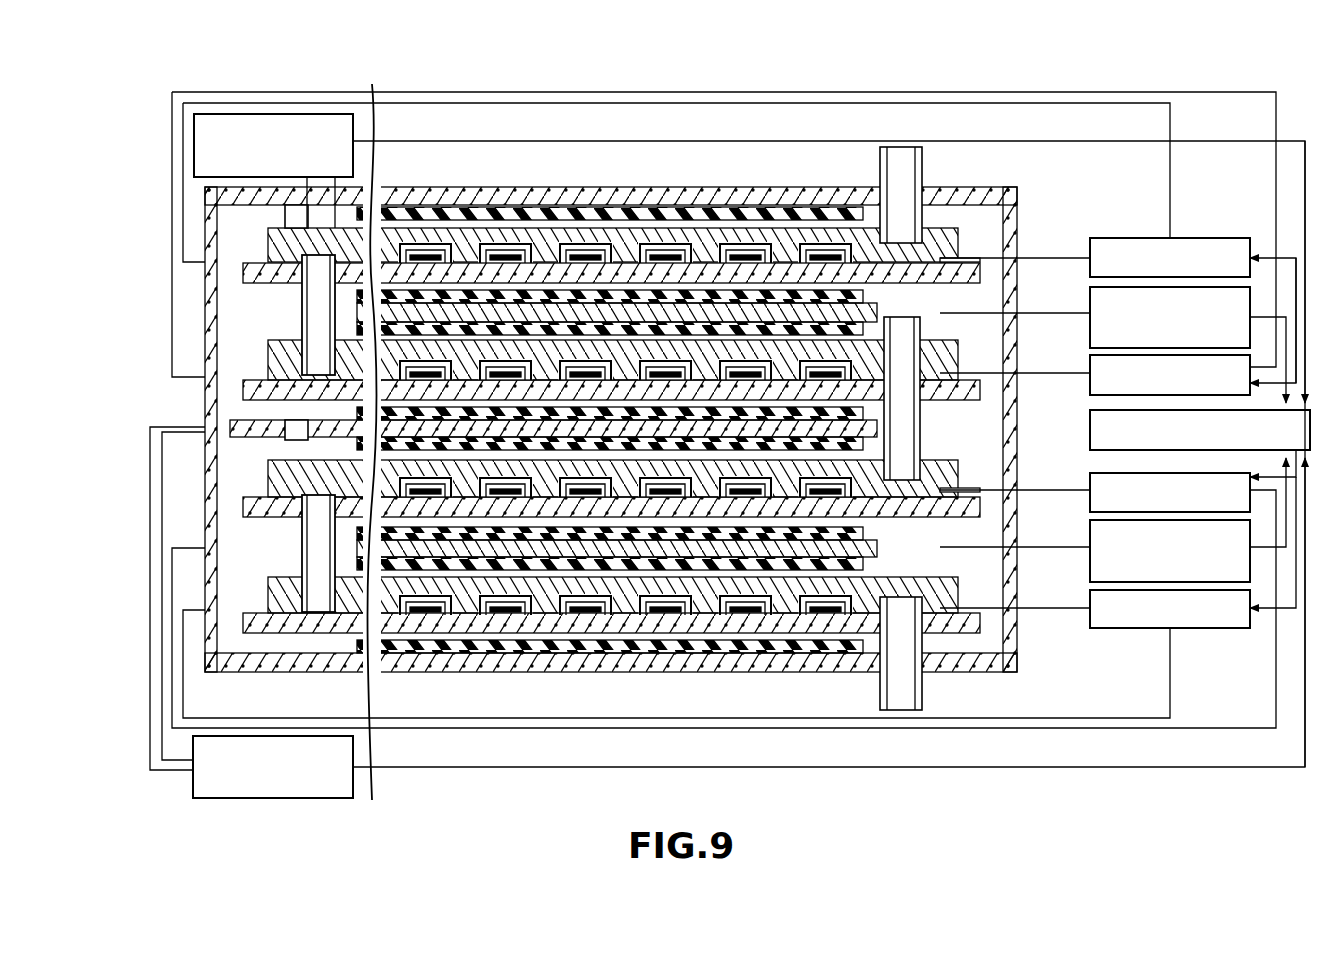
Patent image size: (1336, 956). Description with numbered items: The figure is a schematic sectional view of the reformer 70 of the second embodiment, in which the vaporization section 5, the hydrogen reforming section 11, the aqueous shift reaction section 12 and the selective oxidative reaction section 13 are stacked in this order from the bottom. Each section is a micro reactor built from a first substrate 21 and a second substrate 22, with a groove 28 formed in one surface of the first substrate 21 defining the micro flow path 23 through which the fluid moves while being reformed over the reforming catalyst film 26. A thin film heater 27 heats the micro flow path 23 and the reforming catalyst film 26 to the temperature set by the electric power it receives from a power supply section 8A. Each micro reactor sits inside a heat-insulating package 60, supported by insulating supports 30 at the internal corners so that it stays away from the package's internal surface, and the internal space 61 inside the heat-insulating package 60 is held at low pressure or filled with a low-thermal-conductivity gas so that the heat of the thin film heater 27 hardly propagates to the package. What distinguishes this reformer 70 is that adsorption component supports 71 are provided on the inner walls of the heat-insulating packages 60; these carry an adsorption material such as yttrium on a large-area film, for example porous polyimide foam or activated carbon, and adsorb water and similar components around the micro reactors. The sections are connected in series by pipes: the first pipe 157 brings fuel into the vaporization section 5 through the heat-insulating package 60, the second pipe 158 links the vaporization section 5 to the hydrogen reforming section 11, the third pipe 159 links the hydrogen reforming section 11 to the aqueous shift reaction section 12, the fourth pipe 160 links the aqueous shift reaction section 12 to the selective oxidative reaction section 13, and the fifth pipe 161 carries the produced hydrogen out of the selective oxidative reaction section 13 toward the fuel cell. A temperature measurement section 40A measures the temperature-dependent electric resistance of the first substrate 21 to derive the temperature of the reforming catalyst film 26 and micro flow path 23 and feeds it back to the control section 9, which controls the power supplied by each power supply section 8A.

The reformer 70 is at (152, 122).
The temperature measurement section 40A is at (240, 114).
The groove 28 is at (400, 228).
The internal space 61 is at (415, 243).
The adsorption component support 71 is at (440, 263).
The micro flow path 23 is at (500, 262).
The heat-insulating package 60 is at (560, 210).
The thin film heater 27 is at (630, 300).
The reforming catalyst film 26 is at (660, 330).
The first substrate 21 is at (965, 258).
The third pipe 159 is at (895, 190).
The fifth pipe 161 is at (925, 190).
The second substrate 22 is at (1005, 200).
The insulating support 30 is at (237, 213).
The selective oxidative reaction section 13 is at (203, 237).
The fourth pipe 160 is at (237, 289).
The aqueous shift reaction section 12 is at (203, 355).
The hydrogen reforming section 11 is at (203, 489).
The second pipe 158 is at (237, 548).
The vaporization section 5 is at (203, 605).
The power supply section 8A is at (1090, 267).
The control section 9 is at (1090, 434).
The first pipe 157 is at (925, 712).